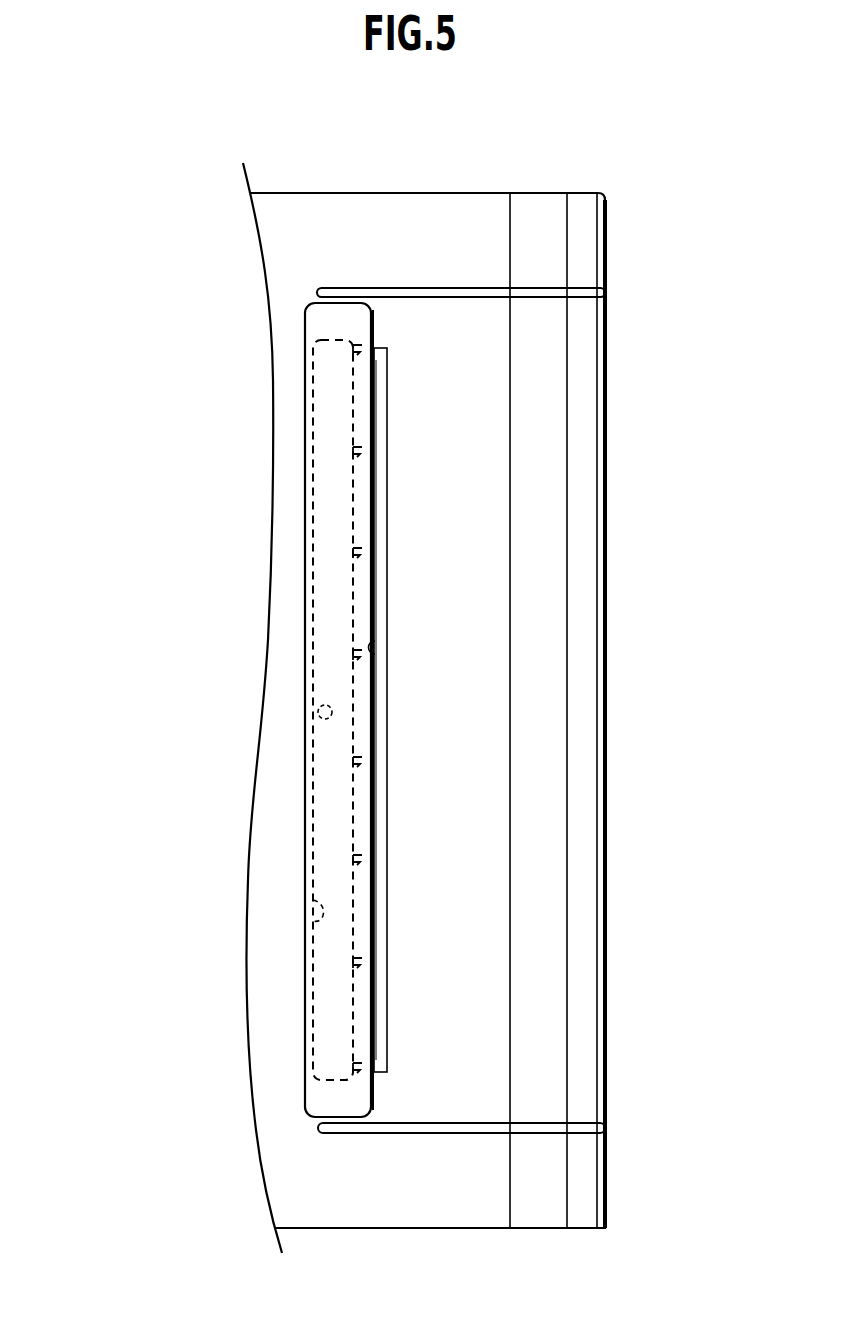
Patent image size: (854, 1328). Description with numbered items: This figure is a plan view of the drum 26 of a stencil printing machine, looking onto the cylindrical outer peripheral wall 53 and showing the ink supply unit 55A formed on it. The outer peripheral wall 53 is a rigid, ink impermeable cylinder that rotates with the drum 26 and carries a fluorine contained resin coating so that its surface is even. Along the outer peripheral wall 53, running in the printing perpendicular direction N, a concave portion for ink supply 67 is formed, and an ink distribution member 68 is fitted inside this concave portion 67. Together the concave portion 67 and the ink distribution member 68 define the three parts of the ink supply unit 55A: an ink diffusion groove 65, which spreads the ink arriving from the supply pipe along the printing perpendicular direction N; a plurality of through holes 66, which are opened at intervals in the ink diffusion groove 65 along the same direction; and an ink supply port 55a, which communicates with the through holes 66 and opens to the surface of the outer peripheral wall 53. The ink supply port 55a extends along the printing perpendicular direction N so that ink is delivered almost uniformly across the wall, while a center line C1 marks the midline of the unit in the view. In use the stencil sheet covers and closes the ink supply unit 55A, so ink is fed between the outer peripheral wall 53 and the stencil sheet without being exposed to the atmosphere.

The drum 26 is at (614, 246).
The outer peripheral wall 53 is at (590, 526).
The ink supply unit 55A is at (404, 847).
The ink supply port 55a is at (386, 655).
The ink diffusion groove 65 is at (318, 918).
The through holes 66 is at (355, 550).
The concave portion for ink supply 67 is at (378, 383).
The ink distribution member 68 is at (320, 322).
The center line C1 is at (251, 710).
The printing perpendicular direction N is at (158, 660).